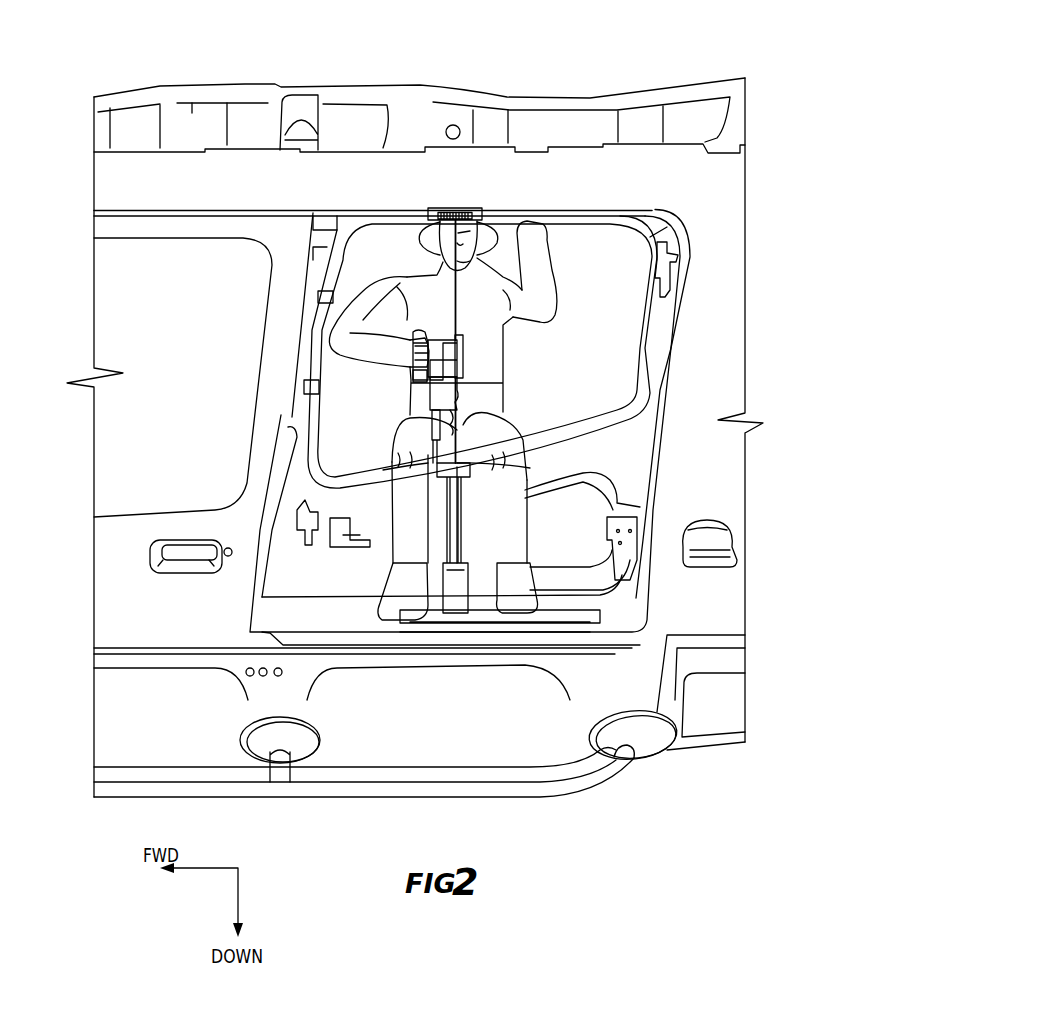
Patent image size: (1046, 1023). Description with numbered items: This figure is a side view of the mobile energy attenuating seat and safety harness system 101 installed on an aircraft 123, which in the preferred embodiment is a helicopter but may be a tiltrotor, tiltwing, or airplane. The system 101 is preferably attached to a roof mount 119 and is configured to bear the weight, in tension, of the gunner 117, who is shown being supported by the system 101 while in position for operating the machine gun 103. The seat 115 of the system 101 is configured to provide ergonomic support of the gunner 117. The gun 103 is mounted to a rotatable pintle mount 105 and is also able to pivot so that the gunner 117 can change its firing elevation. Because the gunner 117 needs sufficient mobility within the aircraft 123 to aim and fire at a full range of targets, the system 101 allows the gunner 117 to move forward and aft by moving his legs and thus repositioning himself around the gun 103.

The aircraft 123 is at (656, 62).
The roof mount 119 is at (440, 210).
The mobile energy attenuating seat and safety harness system 101 is at (449, 190).
The gunner 117 is at (377, 295).
The machine gun 103 is at (408, 405).
The seat 115 is at (506, 409).
The pintle mount 105 is at (464, 537).